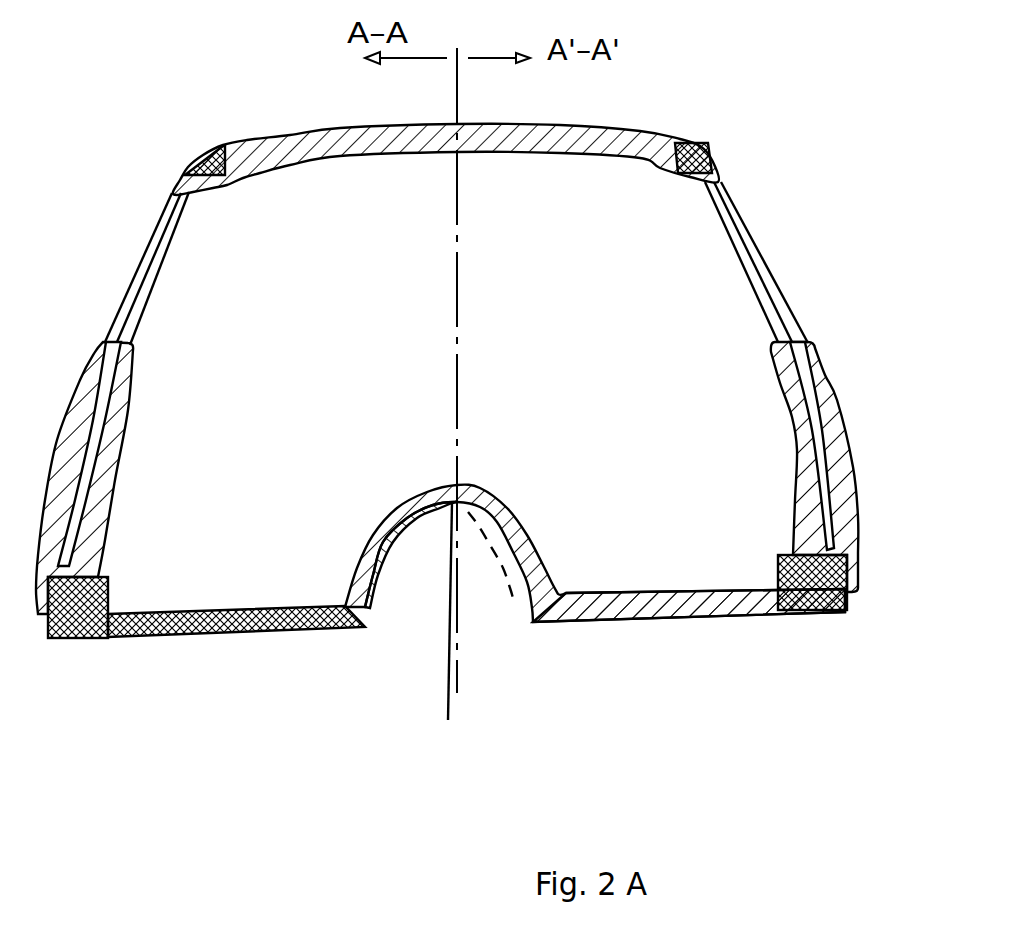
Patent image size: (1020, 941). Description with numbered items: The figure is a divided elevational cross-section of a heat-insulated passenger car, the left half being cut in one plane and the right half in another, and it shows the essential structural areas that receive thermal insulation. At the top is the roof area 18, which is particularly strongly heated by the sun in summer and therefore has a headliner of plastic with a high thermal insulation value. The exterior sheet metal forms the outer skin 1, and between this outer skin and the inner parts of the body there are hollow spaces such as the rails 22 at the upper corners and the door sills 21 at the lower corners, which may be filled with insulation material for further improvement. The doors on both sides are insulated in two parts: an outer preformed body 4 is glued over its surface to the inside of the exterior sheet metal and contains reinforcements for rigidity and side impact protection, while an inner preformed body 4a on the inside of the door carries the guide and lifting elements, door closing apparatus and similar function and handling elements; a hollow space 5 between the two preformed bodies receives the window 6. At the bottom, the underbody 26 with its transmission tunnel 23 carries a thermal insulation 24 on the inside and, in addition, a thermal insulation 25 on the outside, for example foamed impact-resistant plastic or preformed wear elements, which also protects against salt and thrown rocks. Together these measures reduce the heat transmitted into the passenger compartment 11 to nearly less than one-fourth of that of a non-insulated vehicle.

The outer skin 1 is at (320, 127).
The roof area 18 is at (427, 123).
The rails 22 is at (692, 143).
The window 6 is at (143, 263).
The passenger compartment 11 is at (592, 327).
The outer preformed body 4 is at (832, 397).
The inner preformed body 4a is at (798, 403).
The hollow space 5 is at (825, 437).
The door sills 21 is at (812, 612).
The underbody 26 is at (657, 622).
The thermal insulation on the outside 25 is at (525, 622).
The transmission tunnel 23 is at (422, 572).
The thermal insulation on the inside 24 is at (455, 633).